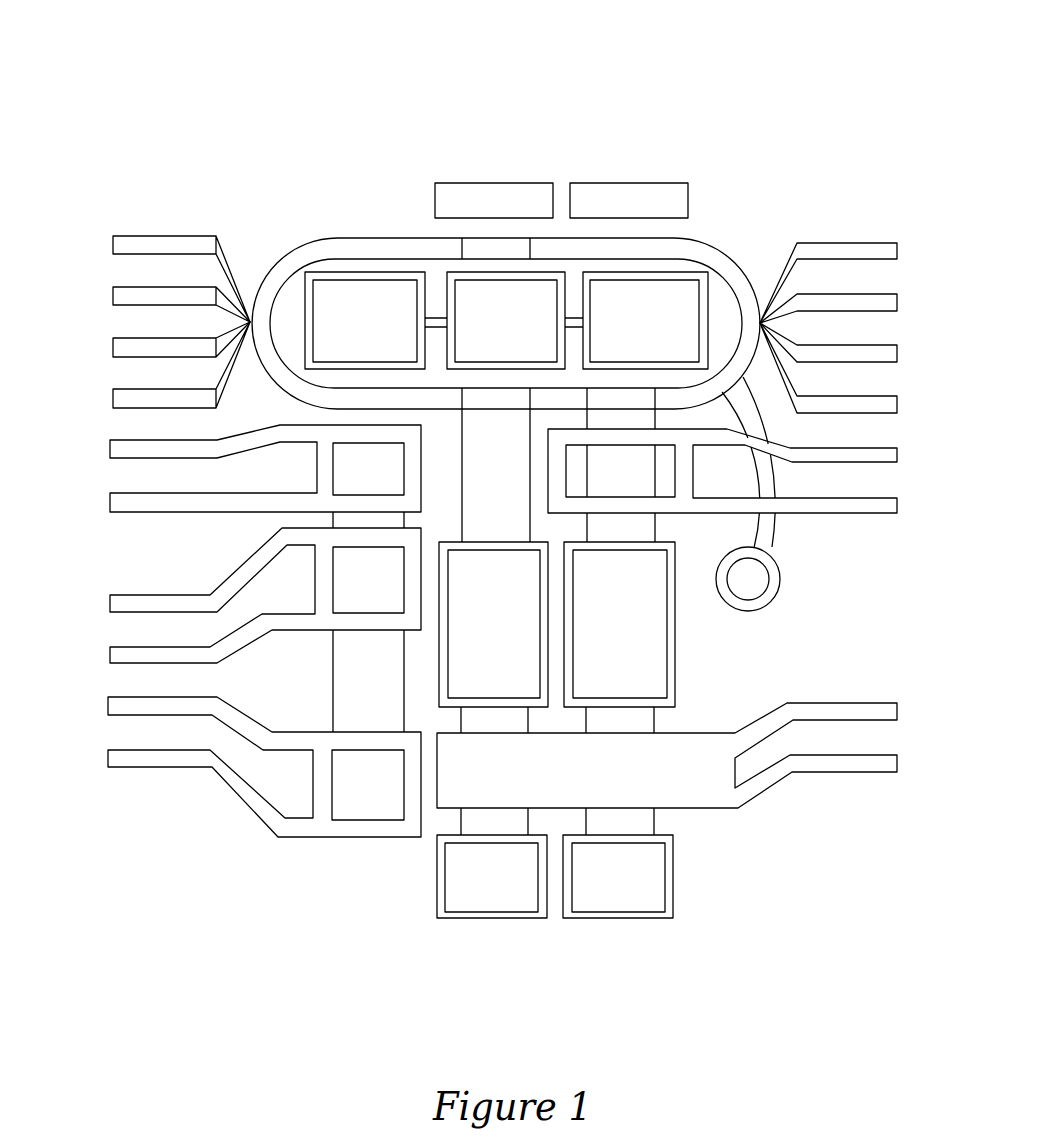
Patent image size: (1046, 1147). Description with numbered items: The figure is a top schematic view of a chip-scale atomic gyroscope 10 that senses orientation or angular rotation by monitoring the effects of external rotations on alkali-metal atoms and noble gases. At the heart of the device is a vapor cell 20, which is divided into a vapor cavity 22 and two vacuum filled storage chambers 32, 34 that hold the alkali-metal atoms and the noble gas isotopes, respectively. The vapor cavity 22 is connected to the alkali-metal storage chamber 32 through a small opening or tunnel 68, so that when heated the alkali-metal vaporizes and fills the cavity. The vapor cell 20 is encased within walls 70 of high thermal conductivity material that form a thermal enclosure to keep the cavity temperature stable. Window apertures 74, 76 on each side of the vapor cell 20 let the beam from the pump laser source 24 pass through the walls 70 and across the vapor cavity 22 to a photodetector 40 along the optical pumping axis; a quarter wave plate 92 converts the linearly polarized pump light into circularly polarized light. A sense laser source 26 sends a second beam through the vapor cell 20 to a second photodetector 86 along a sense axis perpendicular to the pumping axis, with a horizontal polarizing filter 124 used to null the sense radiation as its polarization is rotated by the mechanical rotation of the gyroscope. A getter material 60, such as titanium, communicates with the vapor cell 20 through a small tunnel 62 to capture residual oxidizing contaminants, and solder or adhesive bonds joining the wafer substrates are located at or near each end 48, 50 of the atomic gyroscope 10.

The chip-scale atomic gyroscope 10 is at (600, 78).
The vapor cell 20 is at (772, 220).
The vapor cavity 22 is at (458, 288).
The pump laser source 24 is at (488, 900).
The sense laser source 26 is at (615, 900).
The storage chamber 32 is at (335, 287).
The storage chamber 34 is at (695, 293).
The photodetector 40 is at (492, 192).
The end 48 is at (147, 569).
The end 50 is at (827, 494).
The getter material 60 is at (845, 543).
The tunnel 62 is at (770, 481).
The tunnel 68 is at (433, 322).
The walls 70 is at (288, 382).
The window aperture 74 is at (488, 400).
The window aperture 76 is at (473, 245).
The second photodetector 86 is at (628, 192).
The quarter wave plate 92 is at (530, 645).
The horizontal polarizing filter 124 is at (650, 684).